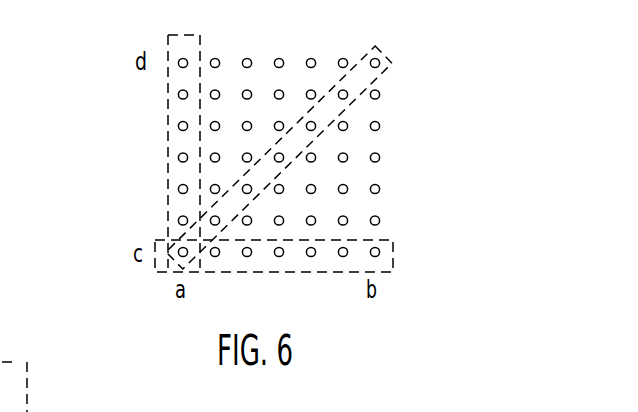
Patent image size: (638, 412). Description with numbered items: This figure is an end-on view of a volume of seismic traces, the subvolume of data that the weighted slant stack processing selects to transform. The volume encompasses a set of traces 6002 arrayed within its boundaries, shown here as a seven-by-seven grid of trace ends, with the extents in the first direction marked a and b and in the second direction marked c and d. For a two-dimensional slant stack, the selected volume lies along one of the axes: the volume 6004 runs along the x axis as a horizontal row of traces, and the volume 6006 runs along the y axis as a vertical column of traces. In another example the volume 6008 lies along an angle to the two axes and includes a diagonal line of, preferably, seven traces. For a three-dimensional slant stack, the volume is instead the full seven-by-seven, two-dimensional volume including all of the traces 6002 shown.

The traces 6002 is at (312, 28).
The volume along the x axis 6004 is at (395, 255).
The volume along the y axis 6006 is at (168, 148).
The volume along an angle to the two axes 6008 is at (378, 77).